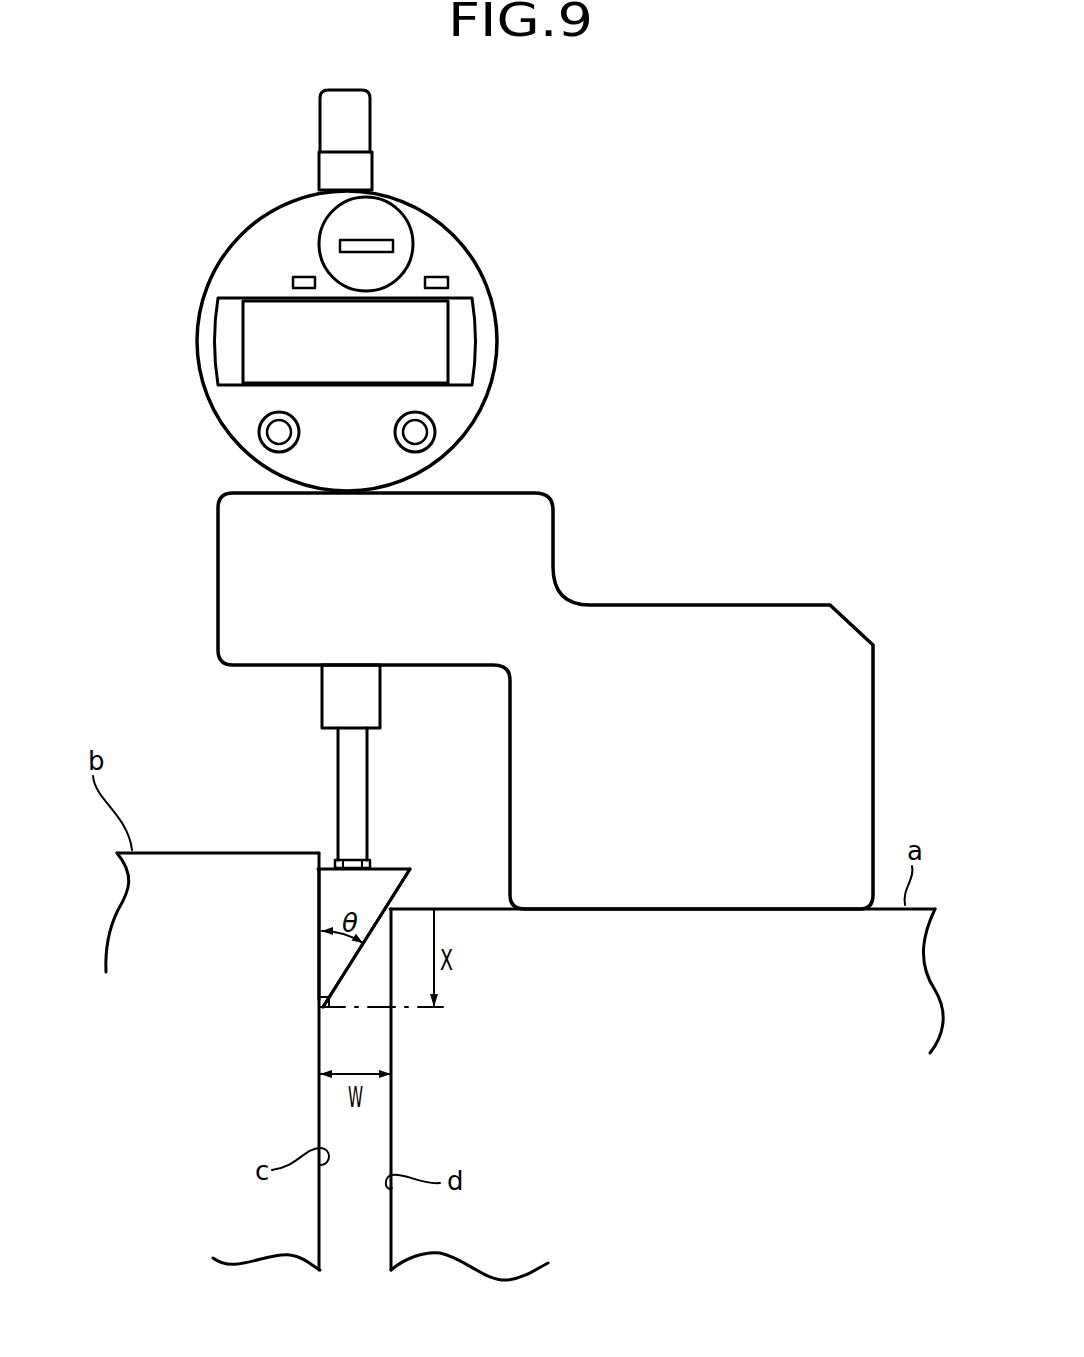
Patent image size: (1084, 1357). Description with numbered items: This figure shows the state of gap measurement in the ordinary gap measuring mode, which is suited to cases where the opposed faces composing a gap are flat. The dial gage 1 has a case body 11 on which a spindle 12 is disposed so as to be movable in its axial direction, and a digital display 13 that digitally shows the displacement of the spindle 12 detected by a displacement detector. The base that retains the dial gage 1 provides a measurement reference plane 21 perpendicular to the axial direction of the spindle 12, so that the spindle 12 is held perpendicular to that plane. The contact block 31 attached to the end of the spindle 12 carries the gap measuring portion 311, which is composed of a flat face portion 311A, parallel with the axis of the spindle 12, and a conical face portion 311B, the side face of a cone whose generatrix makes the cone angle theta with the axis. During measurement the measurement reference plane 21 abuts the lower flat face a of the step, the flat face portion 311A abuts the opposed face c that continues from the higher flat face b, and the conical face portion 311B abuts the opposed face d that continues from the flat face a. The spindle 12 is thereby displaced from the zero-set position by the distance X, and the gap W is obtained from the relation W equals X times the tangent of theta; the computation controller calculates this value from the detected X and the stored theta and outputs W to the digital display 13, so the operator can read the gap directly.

The dial gage 1 is at (472, 548).
The case body 11 is at (306, 341).
The spindle 12 is at (367, 782).
The digital display 13 is at (438, 387).
The measurement reference plane 21 is at (675, 909).
The contact block 31 is at (290, 885).
The gap measuring portion 311 is at (186, 765).
The flat face portion 311A is at (316, 875).
The conical face portion 311B is at (378, 920).